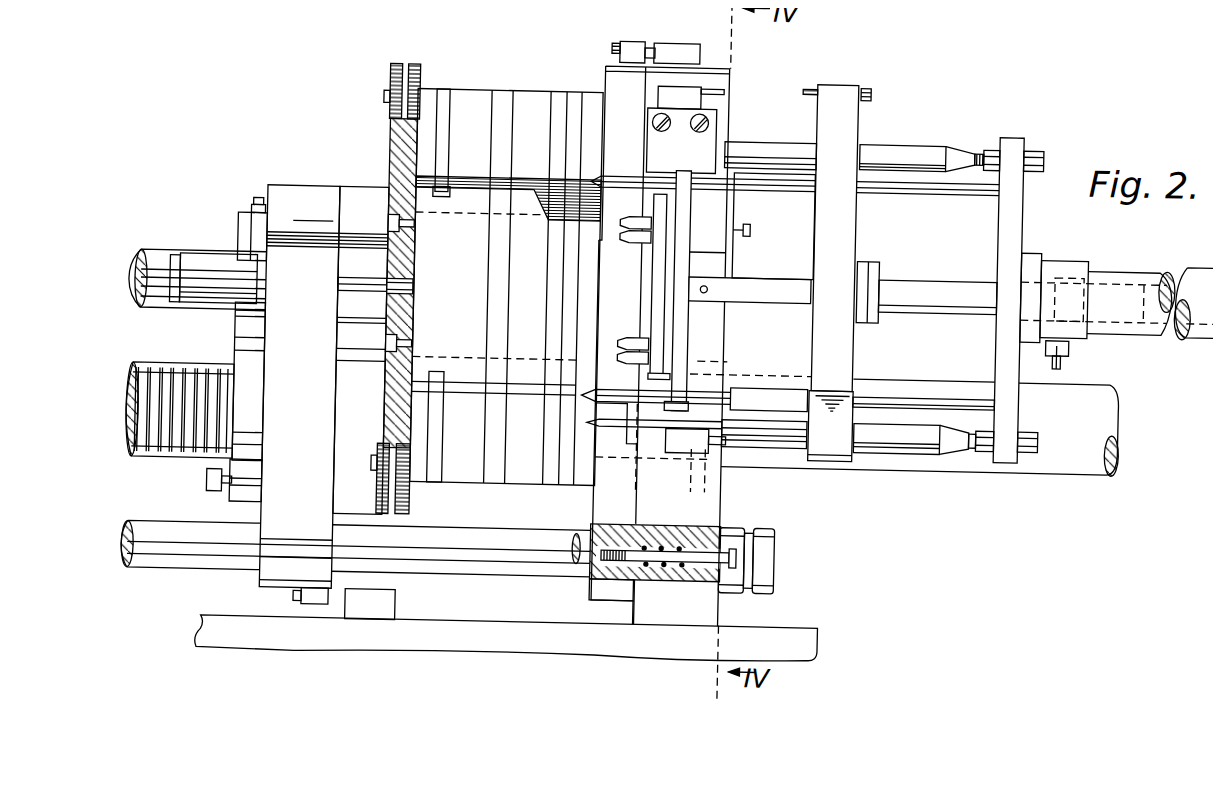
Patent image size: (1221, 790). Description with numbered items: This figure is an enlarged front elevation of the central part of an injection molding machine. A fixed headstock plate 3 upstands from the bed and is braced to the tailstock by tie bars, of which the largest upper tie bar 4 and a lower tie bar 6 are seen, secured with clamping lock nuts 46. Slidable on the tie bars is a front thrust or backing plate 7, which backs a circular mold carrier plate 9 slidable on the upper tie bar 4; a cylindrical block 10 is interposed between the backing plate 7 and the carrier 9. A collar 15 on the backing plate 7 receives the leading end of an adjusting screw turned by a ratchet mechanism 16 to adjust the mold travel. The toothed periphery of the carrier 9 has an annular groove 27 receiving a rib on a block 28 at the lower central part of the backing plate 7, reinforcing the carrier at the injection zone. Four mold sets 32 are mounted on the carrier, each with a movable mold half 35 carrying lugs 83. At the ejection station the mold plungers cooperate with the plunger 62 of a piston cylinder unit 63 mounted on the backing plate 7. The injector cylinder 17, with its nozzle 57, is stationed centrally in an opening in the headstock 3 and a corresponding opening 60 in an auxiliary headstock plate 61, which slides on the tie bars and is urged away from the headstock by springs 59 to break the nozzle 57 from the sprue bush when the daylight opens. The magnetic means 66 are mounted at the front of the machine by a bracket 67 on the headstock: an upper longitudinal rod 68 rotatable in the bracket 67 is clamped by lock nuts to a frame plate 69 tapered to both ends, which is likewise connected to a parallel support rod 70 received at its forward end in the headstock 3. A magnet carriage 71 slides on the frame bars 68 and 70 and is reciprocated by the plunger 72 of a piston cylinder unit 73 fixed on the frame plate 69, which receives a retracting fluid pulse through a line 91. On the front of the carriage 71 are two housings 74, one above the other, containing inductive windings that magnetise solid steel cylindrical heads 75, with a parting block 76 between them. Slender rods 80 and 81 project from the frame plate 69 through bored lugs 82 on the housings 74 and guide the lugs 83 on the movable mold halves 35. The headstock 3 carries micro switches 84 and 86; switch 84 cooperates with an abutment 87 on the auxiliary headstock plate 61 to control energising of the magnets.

The headstock plate 3 is at (722, 80).
The tie bar 4 is at (155, 262).
The tie bar 6 is at (500, 565).
The backing plate 7 is at (331, 402).
The mold carrier plate 9 is at (386, 148).
The cylindrical block 10 is at (349, 203).
The collar 15 is at (240, 380).
The ratchet mechanism 16 is at (207, 492).
The injector cylinder 17 is at (1090, 462).
The annular groove 27 is at (403, 88).
The block 28 is at (395, 512).
The mold set 32 is at (470, 100).
The movable mold half 35 is at (658, 296).
The clamping lock nuts 46 is at (780, 555).
The nozzle 57 is at (616, 462).
The springs 59 is at (680, 541).
The opening 60 is at (590, 478).
The auxiliary headstock plate 61 is at (598, 80).
The plunger 62 is at (363, 283).
The piston cylinder unit 63 is at (199, 268).
The magnetic means 66 is at (920, 452).
The bracket 67 is at (700, 144).
The upper longitudinal rod 68 is at (909, 150).
The frame plate 69 is at (1010, 129).
The support rod 70 is at (880, 447).
The magnet carriage 71 is at (853, 360).
The plunger 72 is at (950, 280).
The piston cylinder unit 73 is at (1131, 322).
The housings 74 is at (795, 243).
The cylindrical head 75 is at (688, 254).
The parting block 76 is at (796, 286).
The slender rod 80 is at (621, 177).
The slender rod 81 is at (612, 392).
The bored lugs 82 is at (770, 186).
The lugs 83 is at (672, 190).
The micro switch 84 is at (652, 45).
The micro switch 86 is at (682, 452).
The abutment 87 is at (625, 42).
The line 91 is at (1062, 350).